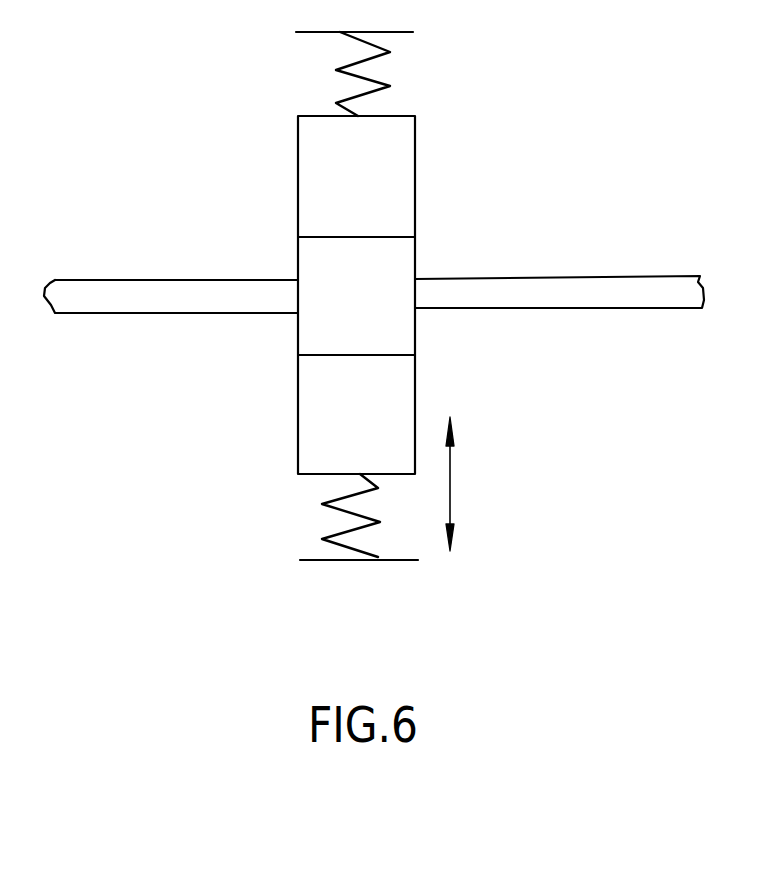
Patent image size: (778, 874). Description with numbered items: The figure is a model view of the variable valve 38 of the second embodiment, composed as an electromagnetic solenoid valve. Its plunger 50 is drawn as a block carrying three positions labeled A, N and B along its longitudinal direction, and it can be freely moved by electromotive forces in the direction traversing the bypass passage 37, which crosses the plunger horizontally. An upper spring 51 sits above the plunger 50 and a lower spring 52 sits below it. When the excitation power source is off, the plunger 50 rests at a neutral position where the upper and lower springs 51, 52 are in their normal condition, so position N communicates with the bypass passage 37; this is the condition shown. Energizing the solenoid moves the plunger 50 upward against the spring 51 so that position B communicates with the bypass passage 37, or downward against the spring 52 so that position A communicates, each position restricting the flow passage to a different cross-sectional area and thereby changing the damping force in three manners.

The bypass passage 37 is at (88, 285).
The variable valve 38 is at (175, 157).
The plunger 50 is at (298, 180).
The spring 51 is at (378, 80).
The spring 52 is at (345, 540).